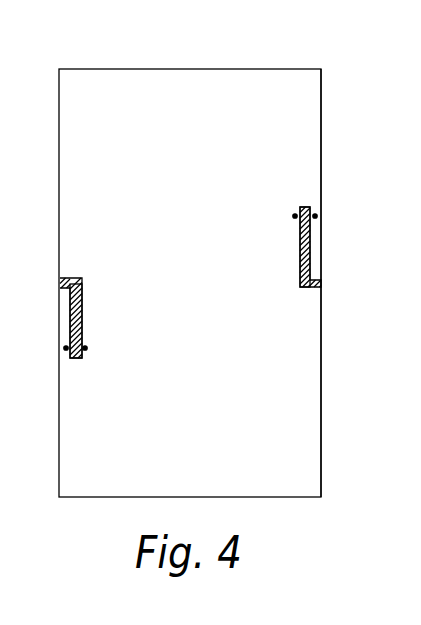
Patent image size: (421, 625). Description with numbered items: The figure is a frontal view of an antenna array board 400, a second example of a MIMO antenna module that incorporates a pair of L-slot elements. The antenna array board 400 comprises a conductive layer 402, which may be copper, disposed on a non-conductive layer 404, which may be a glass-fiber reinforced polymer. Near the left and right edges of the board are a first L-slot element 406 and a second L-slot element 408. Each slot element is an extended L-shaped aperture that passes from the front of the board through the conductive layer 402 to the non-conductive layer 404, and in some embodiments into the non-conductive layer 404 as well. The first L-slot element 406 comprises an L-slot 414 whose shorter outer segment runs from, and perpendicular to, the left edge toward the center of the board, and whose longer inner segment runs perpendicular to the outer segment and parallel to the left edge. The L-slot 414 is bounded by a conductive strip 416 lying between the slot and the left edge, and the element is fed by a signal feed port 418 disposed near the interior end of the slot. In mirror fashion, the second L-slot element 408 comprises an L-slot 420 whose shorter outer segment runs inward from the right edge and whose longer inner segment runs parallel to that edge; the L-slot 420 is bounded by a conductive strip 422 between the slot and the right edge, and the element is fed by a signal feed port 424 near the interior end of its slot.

The antenna array board 400 is at (189, 267).
The conductive layer 402 is at (210, 285).
The non-conductive layer 404 is at (321, 152).
The first L-slot element 406 is at (43, 315).
The second L-slot element 408 is at (333, 253).
The L-slot 414 is at (73, 331).
The conductive strip 416 is at (66, 300).
The signal feed port 418 is at (65, 350).
The L-slot 420 is at (304, 230).
The conductive strip 422 is at (314, 259).
The signal feed port 424 is at (317, 215).